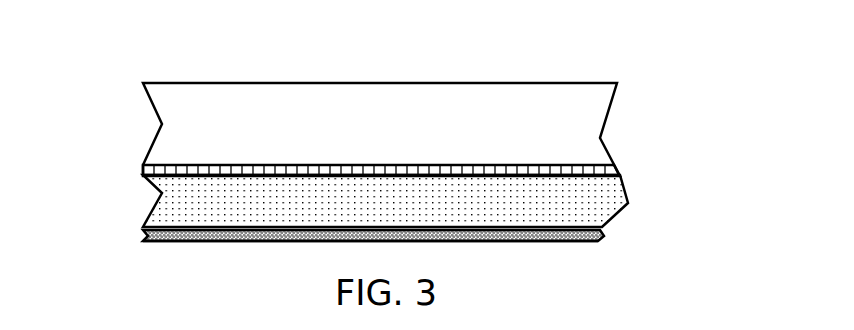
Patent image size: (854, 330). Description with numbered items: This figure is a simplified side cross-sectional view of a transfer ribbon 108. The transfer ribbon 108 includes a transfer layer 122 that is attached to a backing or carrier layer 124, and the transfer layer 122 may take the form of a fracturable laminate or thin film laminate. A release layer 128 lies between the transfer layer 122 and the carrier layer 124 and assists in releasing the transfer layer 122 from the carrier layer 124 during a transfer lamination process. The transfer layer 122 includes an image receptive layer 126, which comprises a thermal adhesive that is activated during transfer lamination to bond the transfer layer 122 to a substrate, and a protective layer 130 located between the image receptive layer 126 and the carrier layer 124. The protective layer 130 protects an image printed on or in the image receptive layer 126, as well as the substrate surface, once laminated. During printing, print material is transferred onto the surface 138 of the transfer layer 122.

The transfer ribbon 108 is at (124, 44).
The transfer layer 122 is at (672, 200).
The carrier layer 124 is at (567, 92).
The image receptive layer 126 is at (158, 242).
The release layer 128 is at (355, 170).
The protective layer 130 is at (163, 212).
The surface 138 is at (567, 256).